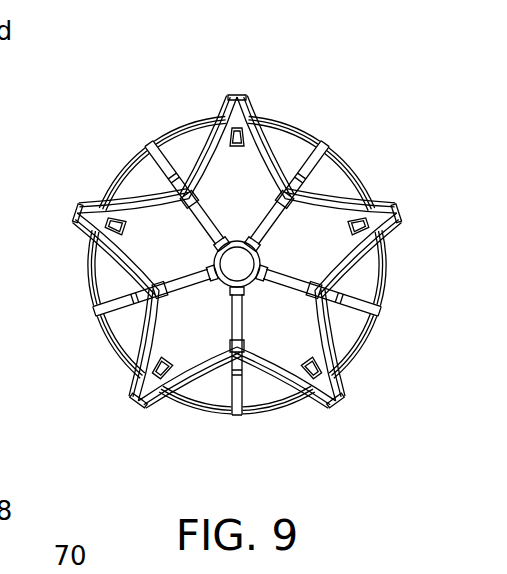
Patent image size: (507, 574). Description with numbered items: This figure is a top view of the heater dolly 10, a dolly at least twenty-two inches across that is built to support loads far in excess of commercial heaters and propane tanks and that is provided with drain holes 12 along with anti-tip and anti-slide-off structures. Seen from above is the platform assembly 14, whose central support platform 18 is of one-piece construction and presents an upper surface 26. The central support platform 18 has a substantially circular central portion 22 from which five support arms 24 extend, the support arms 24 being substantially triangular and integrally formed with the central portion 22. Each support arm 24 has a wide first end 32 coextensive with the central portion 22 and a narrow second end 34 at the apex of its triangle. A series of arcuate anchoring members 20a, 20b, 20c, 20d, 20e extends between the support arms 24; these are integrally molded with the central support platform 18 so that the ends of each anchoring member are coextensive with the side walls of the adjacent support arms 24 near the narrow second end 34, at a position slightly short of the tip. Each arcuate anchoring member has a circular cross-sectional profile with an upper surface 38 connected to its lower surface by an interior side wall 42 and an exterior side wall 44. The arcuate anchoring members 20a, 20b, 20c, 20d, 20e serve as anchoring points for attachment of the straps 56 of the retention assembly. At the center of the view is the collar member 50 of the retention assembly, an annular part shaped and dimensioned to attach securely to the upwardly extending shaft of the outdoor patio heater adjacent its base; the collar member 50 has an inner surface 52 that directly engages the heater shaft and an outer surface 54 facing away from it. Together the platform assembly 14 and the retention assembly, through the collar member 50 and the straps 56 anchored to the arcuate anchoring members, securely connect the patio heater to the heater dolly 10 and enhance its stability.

The heater dolly 10 is at (365, 93).
The drain holes 12 is at (83, 203).
The platform assembly 14 is at (340, 360).
The central support platform 18 is at (313, 243).
The arcuate anchoring member 20a is at (125, 170).
The arcuate anchoring member 20b is at (107, 337).
The arcuate anchoring member 20c is at (263, 403).
The arcuate anchoring member 20d is at (380, 288).
The arcuate anchoring member 20e is at (302, 135).
The central portion 22 is at (290, 303).
The support arms 24 is at (376, 217).
The upper surface 26 is at (167, 238).
The wide first end 32 is at (246, 187).
The narrow second end 34 is at (235, 115).
The upper surface 38 is at (353, 180).
The interior side wall 42 is at (330, 170).
The exterior side wall 44 is at (275, 115).
The collar member 50 is at (232, 240).
The inner surface 52 is at (135, 368).
The outer surface 54 is at (227, 273).
The straps 56 is at (130, 297).